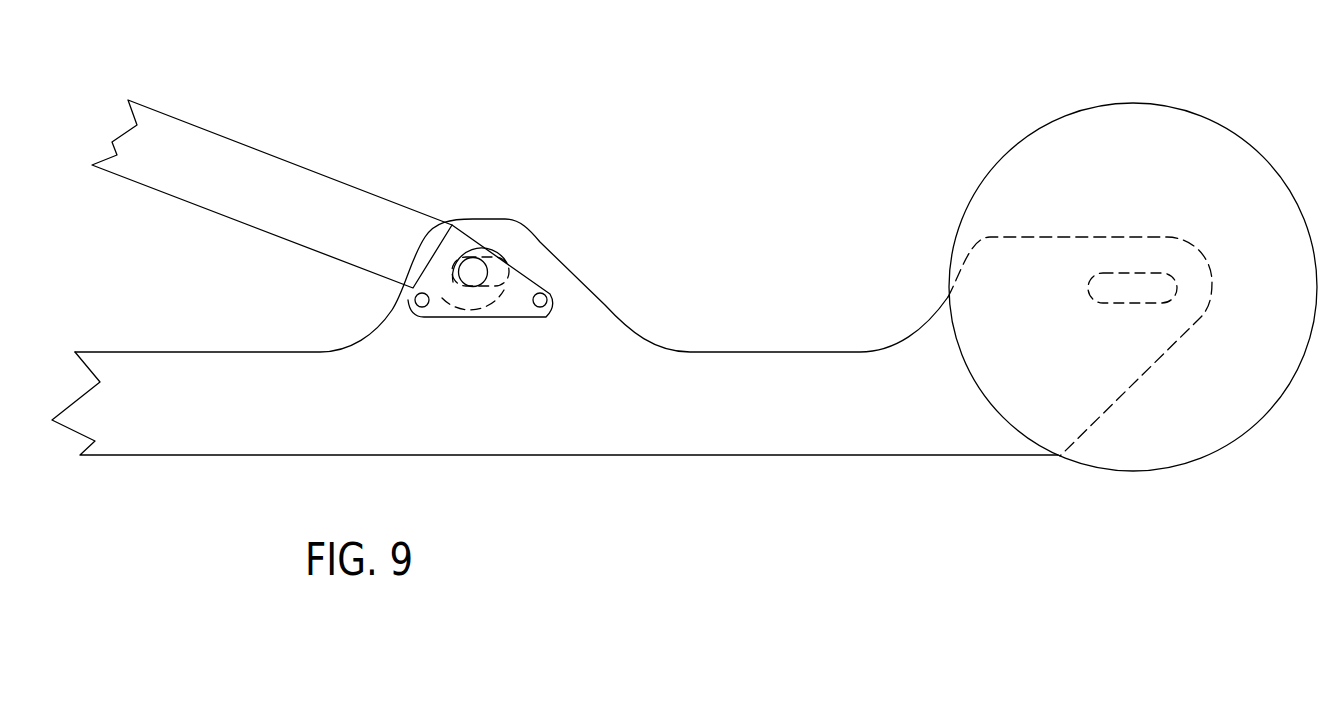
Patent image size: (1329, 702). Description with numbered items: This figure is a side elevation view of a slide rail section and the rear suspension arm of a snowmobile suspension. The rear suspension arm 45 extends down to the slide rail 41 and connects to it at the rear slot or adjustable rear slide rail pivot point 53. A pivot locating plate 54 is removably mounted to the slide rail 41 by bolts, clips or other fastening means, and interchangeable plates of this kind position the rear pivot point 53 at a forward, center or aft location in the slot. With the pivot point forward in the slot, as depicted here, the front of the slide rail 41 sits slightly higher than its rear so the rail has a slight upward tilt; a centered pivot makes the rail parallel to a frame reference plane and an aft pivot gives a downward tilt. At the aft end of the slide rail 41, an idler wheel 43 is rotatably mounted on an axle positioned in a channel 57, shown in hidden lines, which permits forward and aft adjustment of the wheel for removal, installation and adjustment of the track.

The slide rail 41 is at (190, 431).
The idler wheel 43 is at (1133, 148).
The rear suspension arm 45 is at (195, 157).
The rear slide rail pivot point 53 is at (498, 270).
The pivot locating plate 54 is at (518, 305).
The channel 57 is at (1120, 285).